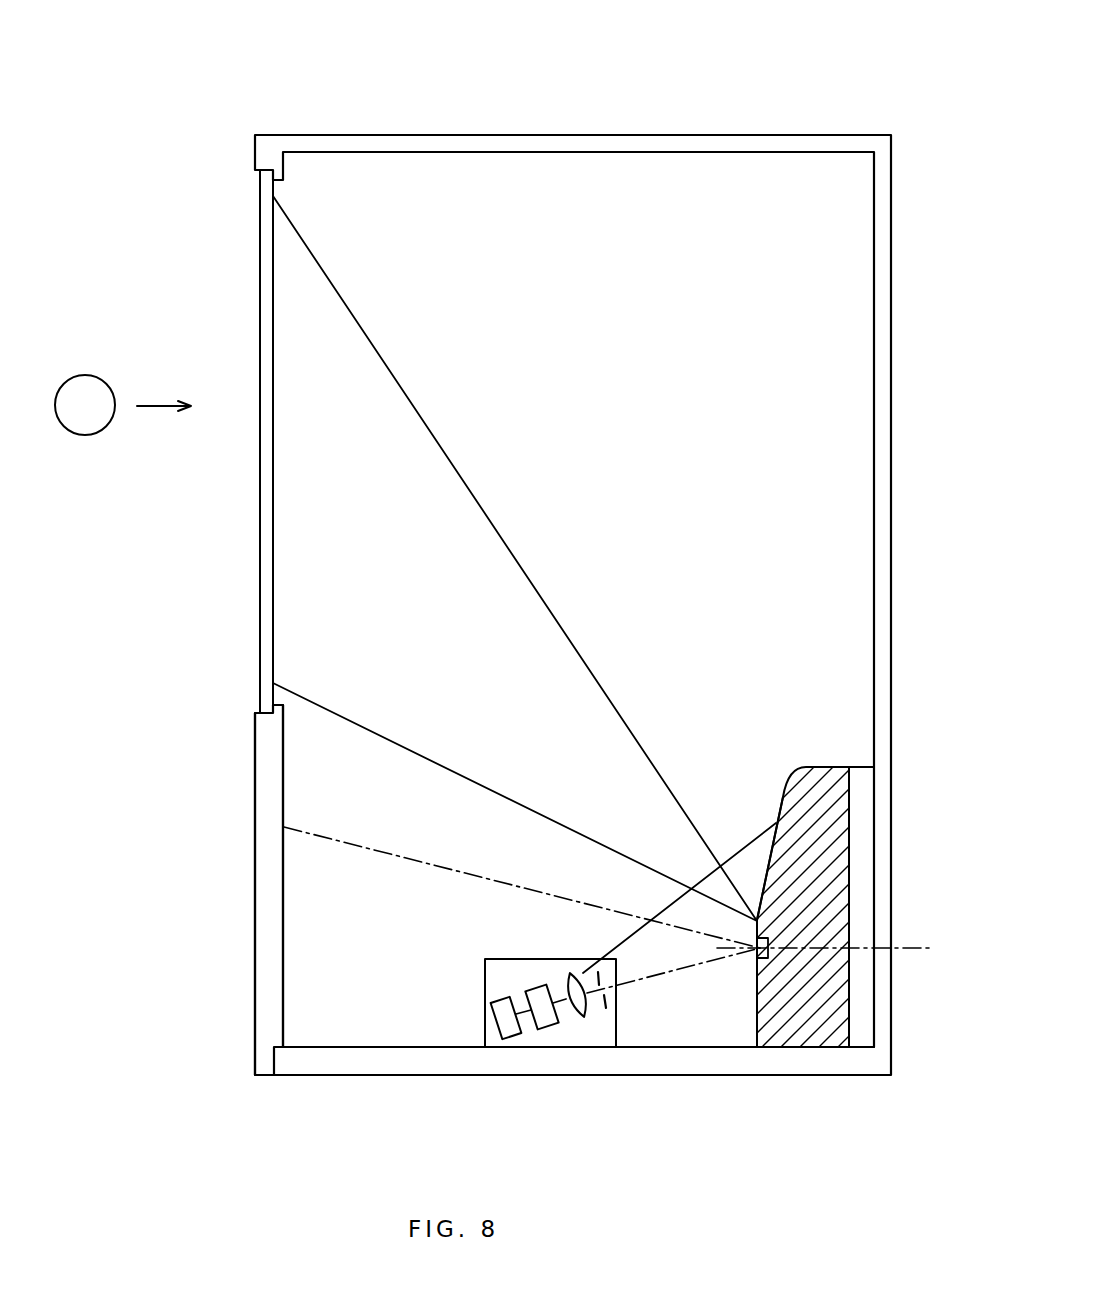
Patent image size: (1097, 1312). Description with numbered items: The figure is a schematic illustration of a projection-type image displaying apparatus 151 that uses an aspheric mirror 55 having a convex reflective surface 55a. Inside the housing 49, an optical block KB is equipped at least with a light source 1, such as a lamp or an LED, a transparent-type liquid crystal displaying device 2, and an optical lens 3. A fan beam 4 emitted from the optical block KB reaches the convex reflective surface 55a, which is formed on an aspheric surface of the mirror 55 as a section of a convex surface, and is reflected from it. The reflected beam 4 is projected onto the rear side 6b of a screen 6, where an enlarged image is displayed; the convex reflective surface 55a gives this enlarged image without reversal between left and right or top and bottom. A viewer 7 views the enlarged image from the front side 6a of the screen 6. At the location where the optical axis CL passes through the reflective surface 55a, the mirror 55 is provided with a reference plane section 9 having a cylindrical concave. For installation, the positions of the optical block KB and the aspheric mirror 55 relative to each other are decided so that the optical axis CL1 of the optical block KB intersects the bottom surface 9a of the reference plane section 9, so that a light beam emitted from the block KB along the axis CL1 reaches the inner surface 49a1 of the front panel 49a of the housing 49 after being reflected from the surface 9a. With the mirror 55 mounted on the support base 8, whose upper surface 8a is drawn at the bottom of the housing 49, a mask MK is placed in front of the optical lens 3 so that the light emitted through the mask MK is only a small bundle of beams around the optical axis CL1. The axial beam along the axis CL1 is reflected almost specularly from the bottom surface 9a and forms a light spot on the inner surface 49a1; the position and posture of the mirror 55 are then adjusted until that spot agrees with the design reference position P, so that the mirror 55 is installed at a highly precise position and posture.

The housing 49 is at (538, 135).
The projection-type image displaying apparatus 151 is at (791, 75).
The screen 6 is at (267, 441).
The front side of the screen 6a is at (258, 563).
The rear side of the screen 6b is at (275, 563).
The viewer 7 is at (86, 382).
The front panel 49a is at (258, 910).
The inner surface of the front panel 49a1 is at (286, 908).
The support base 8 is at (356, 1072).
The bottom plate upper surface 8a is at (390, 1046).
The fan beam 4 is at (668, 905).
The reference position P is at (291, 822).
The optical axis of the optical block CL1 is at (655, 977).
The optical axis CL is at (908, 948).
The aspheric mirror 55 is at (823, 767).
The convex reflective surface 55a is at (760, 878).
The reference plane section 9 is at (745, 976).
The bottom surface of the reference plane section 9a is at (757, 950).
The optical block KB is at (515, 959).
The light source 1 is at (509, 1038).
The transparent-type liquid crystal displaying device 2 is at (545, 1033).
The optical lens 3 is at (580, 1020).
The mask MK is at (606, 1036).